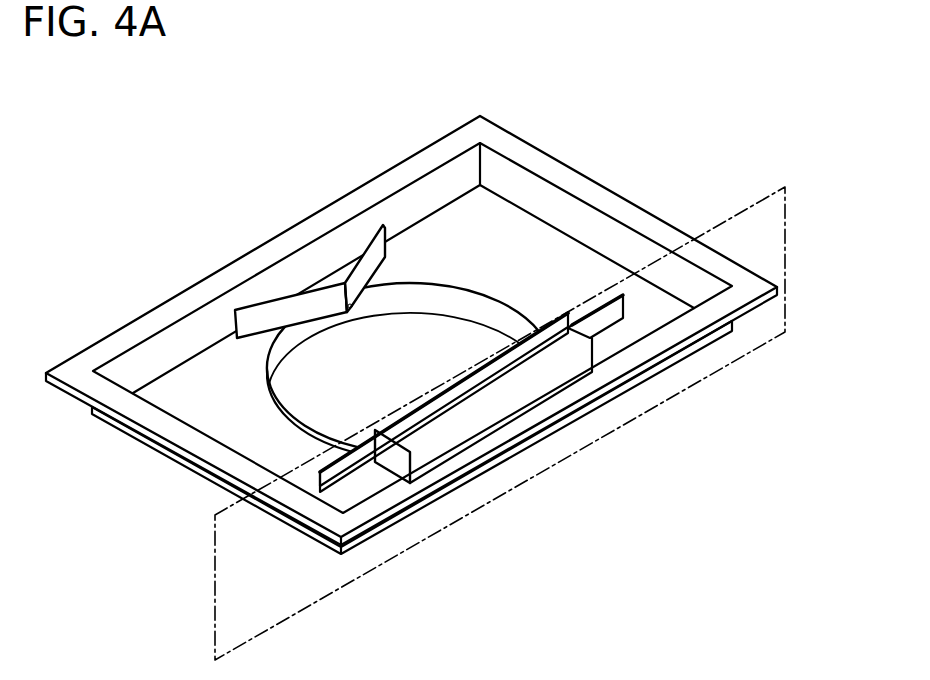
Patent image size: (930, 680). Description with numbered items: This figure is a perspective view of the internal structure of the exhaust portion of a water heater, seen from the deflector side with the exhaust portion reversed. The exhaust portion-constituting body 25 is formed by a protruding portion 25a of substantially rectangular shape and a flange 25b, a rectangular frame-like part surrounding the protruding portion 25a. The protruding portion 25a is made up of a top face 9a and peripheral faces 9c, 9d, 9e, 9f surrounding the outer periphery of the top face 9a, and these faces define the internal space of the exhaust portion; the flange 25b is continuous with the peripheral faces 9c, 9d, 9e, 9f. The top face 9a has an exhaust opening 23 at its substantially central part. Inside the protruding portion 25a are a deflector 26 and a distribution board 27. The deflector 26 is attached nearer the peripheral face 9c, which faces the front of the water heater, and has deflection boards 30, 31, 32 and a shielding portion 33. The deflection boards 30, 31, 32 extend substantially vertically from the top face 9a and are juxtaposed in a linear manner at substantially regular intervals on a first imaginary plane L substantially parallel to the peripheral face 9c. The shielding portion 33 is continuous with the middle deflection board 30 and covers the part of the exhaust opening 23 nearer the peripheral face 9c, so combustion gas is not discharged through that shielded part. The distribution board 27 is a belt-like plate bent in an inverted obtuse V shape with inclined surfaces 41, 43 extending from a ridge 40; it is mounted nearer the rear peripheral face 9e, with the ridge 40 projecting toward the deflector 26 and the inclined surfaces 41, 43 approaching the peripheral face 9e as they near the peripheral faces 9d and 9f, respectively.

The top face 9a is at (583, 273).
The peripheral face 9c is at (703, 347).
The peripheral face 9d is at (163, 457).
The peripheral face 9e is at (420, 200).
The peripheral face 9f is at (515, 177).
The exhaust opening 23 is at (458, 335).
The exhaust portion-constituting body 25 is at (65, 210).
The protruding portion 25a is at (205, 383).
The flange 25b is at (97, 362).
The deflector 26 is at (482, 421).
The distribution board 27 is at (311, 224).
The deflection board 30 is at (445, 398).
The deflection board 31 is at (352, 468).
The deflection board 32 is at (607, 323).
The shielding portion 33 is at (505, 397).
The ridge 40 is at (351, 306).
The inclined surface 41 is at (283, 298).
The inclined surface 43 is at (362, 258).
The first imaginary plane L is at (786, 256).